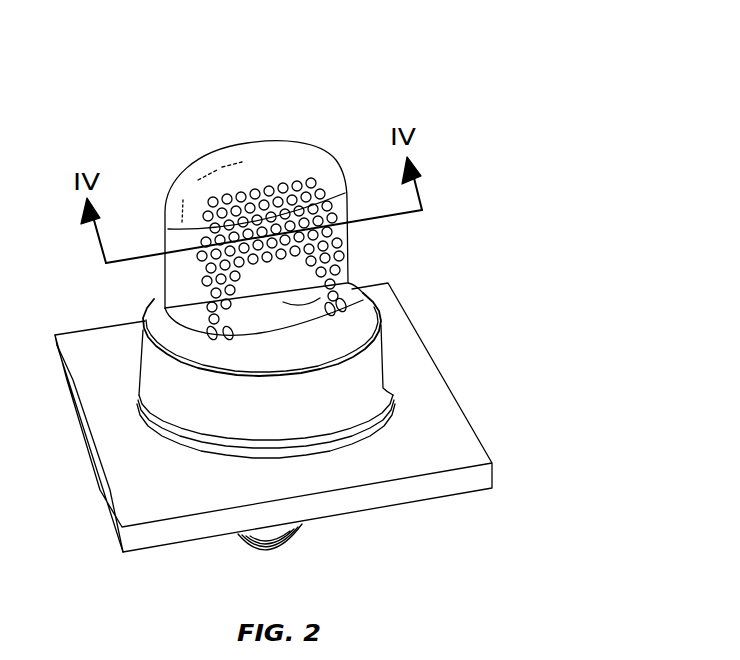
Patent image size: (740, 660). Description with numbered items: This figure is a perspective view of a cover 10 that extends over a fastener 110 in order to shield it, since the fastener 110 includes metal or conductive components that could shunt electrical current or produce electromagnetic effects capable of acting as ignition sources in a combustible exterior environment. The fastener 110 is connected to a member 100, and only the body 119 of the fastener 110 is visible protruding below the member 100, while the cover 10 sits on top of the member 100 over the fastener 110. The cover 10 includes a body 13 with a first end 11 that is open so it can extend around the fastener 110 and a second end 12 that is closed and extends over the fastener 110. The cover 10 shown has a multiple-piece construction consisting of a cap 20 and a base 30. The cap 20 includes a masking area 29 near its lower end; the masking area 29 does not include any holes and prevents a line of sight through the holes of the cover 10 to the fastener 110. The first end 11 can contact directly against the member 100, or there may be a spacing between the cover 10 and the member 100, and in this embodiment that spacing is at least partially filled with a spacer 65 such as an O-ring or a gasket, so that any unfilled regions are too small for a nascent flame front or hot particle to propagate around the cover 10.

The cover 10 is at (158, 104).
The first end 11 is at (137, 407).
The second end 12 is at (277, 152).
The body 13 is at (353, 253).
The cap 20 is at (248, 143).
The masking area 29 is at (338, 293).
The base 30 is at (347, 375).
The spacer 65 is at (150, 428).
The member 100 is at (437, 437).
The fastener 110 is at (230, 550).
The body 119 is at (293, 547).